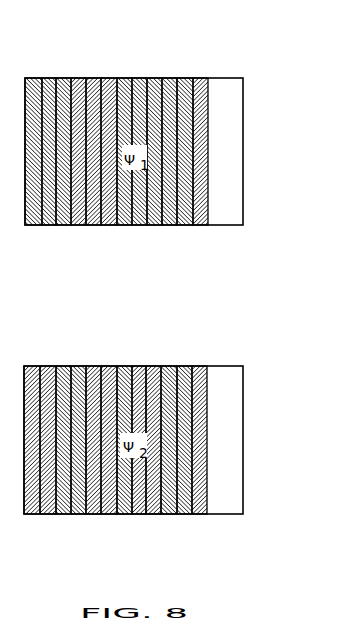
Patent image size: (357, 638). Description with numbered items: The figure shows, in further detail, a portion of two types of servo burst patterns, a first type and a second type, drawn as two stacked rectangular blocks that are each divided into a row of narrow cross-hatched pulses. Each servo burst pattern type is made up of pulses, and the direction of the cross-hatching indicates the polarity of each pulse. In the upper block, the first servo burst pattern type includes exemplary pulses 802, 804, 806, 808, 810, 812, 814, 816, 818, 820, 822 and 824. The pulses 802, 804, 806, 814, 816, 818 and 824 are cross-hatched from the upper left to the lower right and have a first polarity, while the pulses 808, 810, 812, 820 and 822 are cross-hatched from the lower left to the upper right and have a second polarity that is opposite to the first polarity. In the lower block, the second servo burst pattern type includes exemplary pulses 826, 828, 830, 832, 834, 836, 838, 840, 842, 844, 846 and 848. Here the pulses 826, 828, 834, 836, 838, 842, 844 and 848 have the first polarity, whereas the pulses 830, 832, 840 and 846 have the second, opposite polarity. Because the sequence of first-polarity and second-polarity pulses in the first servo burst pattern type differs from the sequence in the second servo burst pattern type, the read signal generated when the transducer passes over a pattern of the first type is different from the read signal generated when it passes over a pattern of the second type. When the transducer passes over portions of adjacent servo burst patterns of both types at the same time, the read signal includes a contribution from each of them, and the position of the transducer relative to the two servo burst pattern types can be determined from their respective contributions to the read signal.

The pulse 802 is at (34, 78).
The pulse 804 is at (50, 78).
The pulse 806 is at (63, 78).
The pulse 808 is at (79, 225).
The pulse 810 is at (98, 225).
The pulse 812 is at (113, 225).
The pulse 814 is at (124, 78).
The pulse 816 is at (144, 78).
The pulse 818 is at (158, 78).
The pulse 820 is at (165, 225).
The pulse 822 is at (183, 225).
The pulse 824 is at (200, 78).
The pulse 826 is at (34, 366).
The pulse 828 is at (51, 366).
The pulse 830 is at (62, 514).
The pulse 832 is at (77, 514).
The pulse 834 is at (92, 366).
The pulse 836 is at (108, 366).
The pulse 838 is at (125, 366).
The pulse 840 is at (135, 514).
The pulse 842 is at (153, 366).
The pulse 844 is at (172, 366).
The pulse 846 is at (183, 514).
The pulse 848 is at (200, 366).